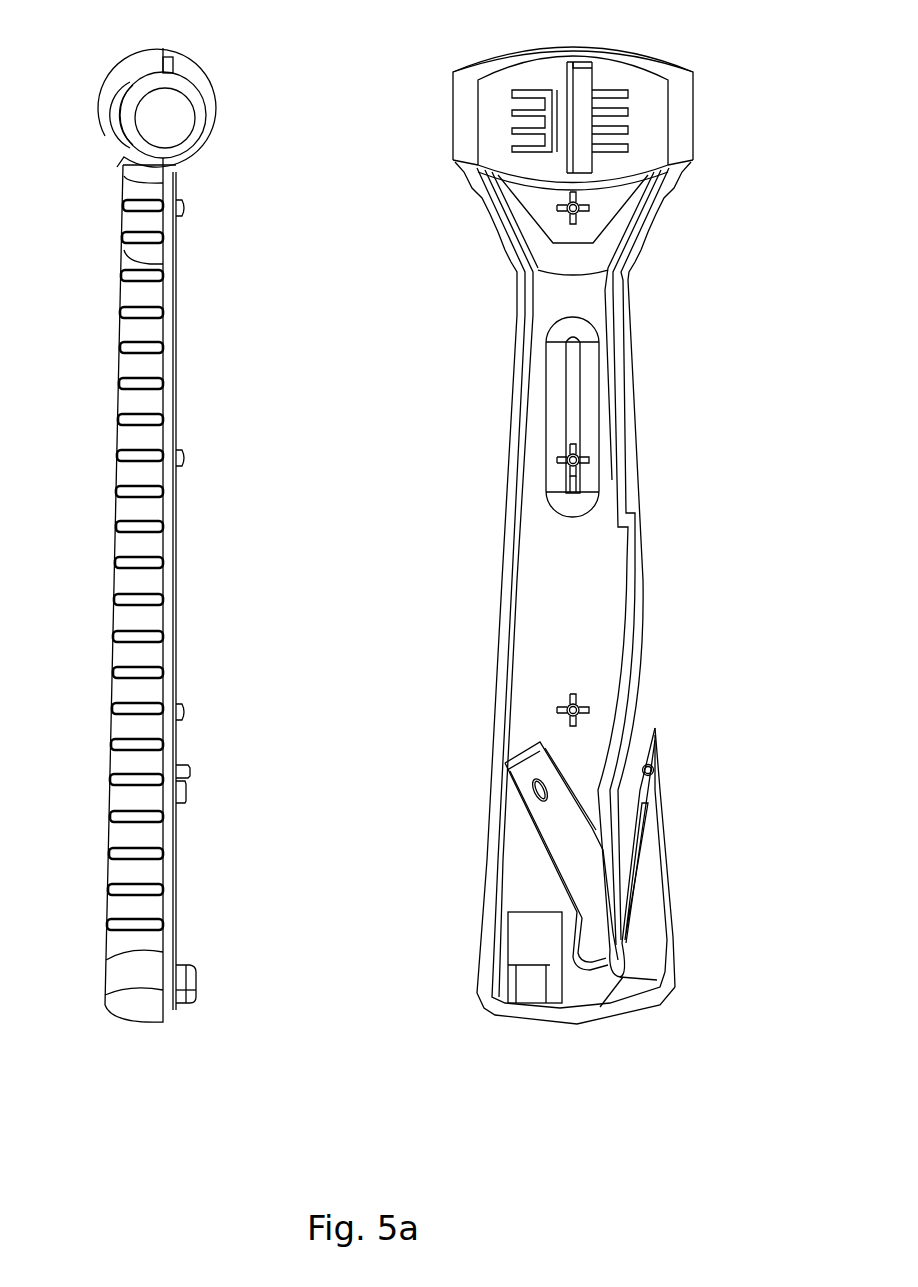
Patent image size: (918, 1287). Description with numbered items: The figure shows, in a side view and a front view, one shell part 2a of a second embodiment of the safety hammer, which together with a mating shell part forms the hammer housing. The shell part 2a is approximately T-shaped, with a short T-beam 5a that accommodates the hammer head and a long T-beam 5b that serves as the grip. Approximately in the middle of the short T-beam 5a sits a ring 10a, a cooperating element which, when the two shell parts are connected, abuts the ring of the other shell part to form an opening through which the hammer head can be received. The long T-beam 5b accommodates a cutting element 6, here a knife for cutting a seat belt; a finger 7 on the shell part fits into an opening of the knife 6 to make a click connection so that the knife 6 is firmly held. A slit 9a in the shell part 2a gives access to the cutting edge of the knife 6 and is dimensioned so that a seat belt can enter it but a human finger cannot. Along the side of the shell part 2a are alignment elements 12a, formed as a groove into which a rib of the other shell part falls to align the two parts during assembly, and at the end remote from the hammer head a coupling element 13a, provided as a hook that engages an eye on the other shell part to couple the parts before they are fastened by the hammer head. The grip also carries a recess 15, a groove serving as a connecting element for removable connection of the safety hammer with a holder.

The shell part 2a is at (460, 1035).
The short T-beam 5a is at (712, 118).
The long T-beam 5b is at (714, 570).
The cutting element 6 is at (567, 835).
The finger 7 is at (533, 790).
The slit 9a is at (645, 725).
The ring 10a is at (203, 118).
The alignment element 12a is at (186, 207).
The coupling element 13a is at (197, 987).
The recess 15 is at (573, 405).